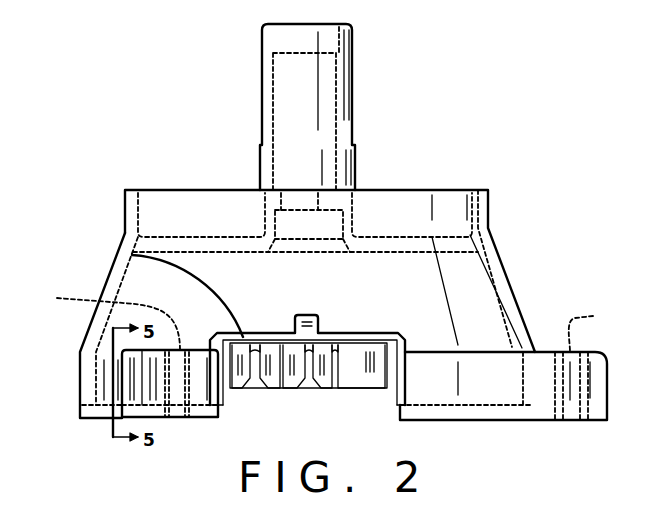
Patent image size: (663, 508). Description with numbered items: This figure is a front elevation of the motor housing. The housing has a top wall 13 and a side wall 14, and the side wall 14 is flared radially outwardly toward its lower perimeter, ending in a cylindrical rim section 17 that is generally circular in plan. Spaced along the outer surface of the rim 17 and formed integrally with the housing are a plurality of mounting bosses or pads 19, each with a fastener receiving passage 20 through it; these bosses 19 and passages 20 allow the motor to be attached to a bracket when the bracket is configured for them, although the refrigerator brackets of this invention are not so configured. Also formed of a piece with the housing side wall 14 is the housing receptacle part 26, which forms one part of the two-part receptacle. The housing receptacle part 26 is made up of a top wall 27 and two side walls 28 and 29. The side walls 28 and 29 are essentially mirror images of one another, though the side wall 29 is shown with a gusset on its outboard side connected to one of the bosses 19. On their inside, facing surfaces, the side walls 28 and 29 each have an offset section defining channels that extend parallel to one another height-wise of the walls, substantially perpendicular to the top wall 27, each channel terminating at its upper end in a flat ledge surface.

The top wall 13 is at (393, 235).
The side wall 14 is at (514, 297).
The cylindrical rim section 17 is at (80, 388).
The mounting boss 19 is at (153, 393).
The fastener receiving passage 20 is at (323, 321).
The housing receptacle part 26 is at (368, 327).
The top wall 27 is at (132, 255).
The side wall 28 is at (396, 406).
The side wall 29 is at (224, 404).